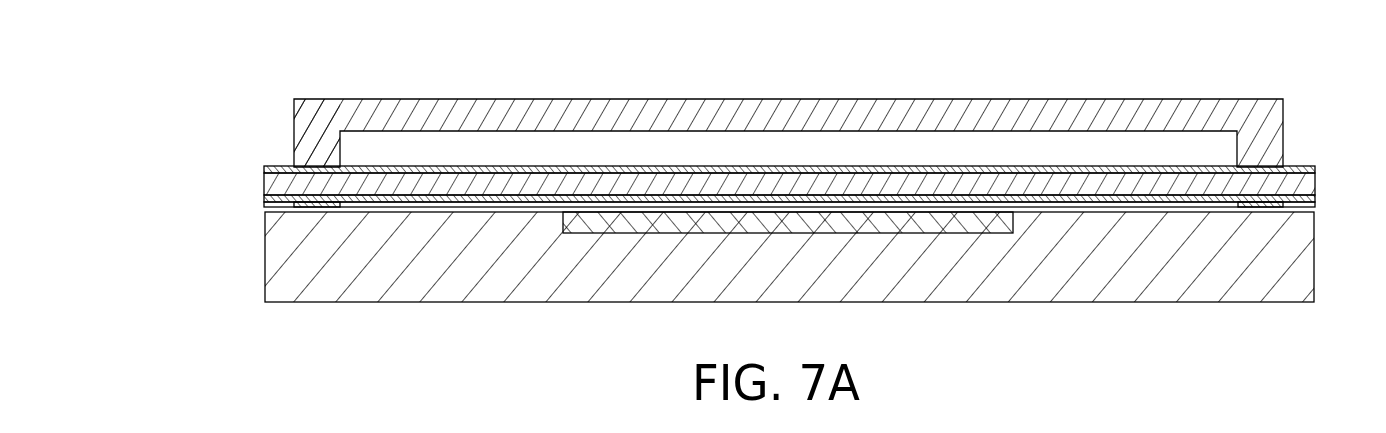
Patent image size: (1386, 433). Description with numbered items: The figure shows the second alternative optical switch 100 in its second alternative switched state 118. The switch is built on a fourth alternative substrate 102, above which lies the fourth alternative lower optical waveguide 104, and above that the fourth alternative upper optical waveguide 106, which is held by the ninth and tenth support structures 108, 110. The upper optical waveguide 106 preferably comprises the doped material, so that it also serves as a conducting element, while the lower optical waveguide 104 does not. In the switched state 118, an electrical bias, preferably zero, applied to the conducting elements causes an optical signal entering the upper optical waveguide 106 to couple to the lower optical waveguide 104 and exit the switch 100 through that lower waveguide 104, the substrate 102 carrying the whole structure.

The second alternative optical switch 100 is at (214, 60).
The second alternative switched state 118 is at (214, 119).
The tenth support structure 110 is at (1285, 107).
The ninth support structure 108 is at (294, 134).
The fourth alternative upper optical waveguide 106 is at (264, 184).
The fourth alternative substrate 102 is at (265, 262).
The fourth alternative lower optical waveguide 104 is at (927, 237).